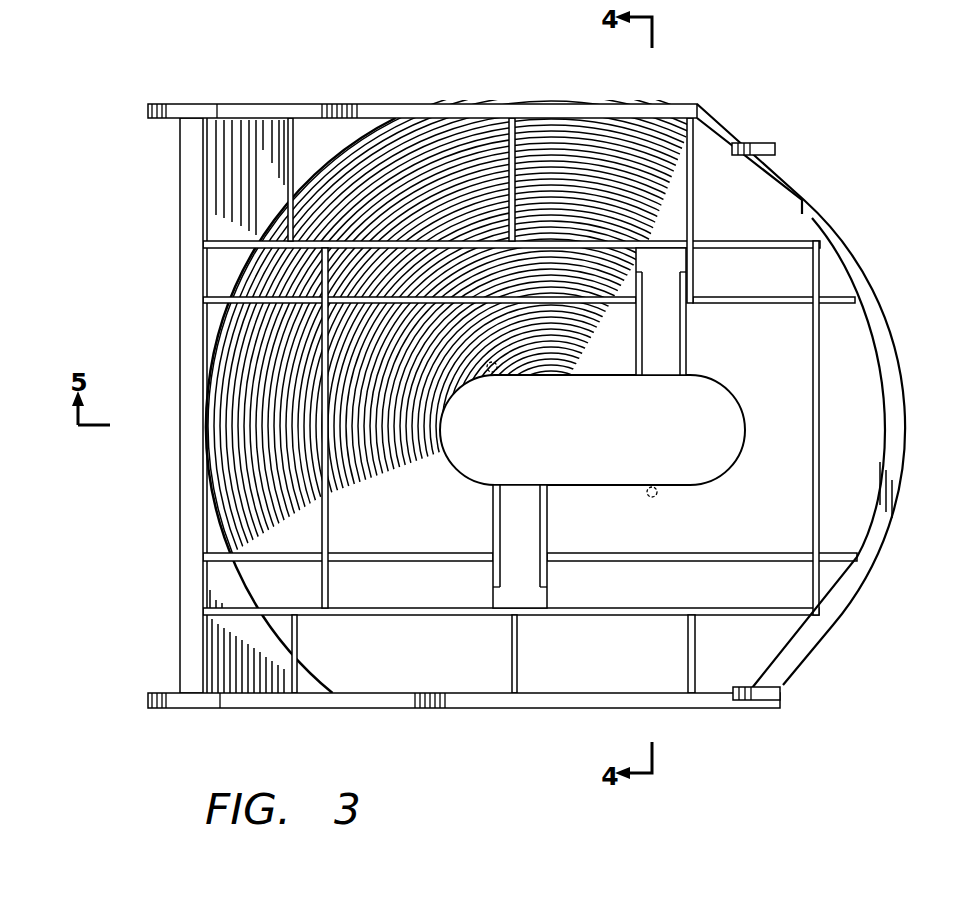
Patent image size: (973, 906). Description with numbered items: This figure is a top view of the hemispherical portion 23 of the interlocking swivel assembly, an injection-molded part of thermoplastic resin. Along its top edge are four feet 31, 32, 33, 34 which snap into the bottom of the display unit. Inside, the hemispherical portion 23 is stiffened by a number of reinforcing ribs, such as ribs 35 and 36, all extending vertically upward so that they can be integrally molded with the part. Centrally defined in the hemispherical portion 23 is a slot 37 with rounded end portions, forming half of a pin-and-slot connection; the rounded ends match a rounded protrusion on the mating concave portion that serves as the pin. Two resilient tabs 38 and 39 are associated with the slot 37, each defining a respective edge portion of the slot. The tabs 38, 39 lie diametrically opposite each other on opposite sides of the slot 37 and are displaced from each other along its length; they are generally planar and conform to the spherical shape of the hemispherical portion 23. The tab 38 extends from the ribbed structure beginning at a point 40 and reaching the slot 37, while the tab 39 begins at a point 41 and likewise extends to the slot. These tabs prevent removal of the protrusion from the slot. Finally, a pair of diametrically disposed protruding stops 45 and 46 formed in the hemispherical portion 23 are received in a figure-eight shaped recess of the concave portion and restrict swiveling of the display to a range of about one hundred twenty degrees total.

The hemispherical portion 23 is at (847, 191).
The foot 31 is at (163, 708).
The foot 32 is at (783, 692).
The foot 33 is at (163, 104).
The foot 34 is at (758, 143).
The reinforcing rib 35 is at (327, 531).
The reinforcing rib 36 is at (604, 305).
The slot 37 is at (713, 408).
The resilient tab 38 is at (662, 345).
The resilient tab 39 is at (515, 537).
The point 40 is at (706, 270).
The point 41 is at (560, 583).
The protruding stop 45 is at (497, 376).
The protruding stop 46 is at (650, 486).